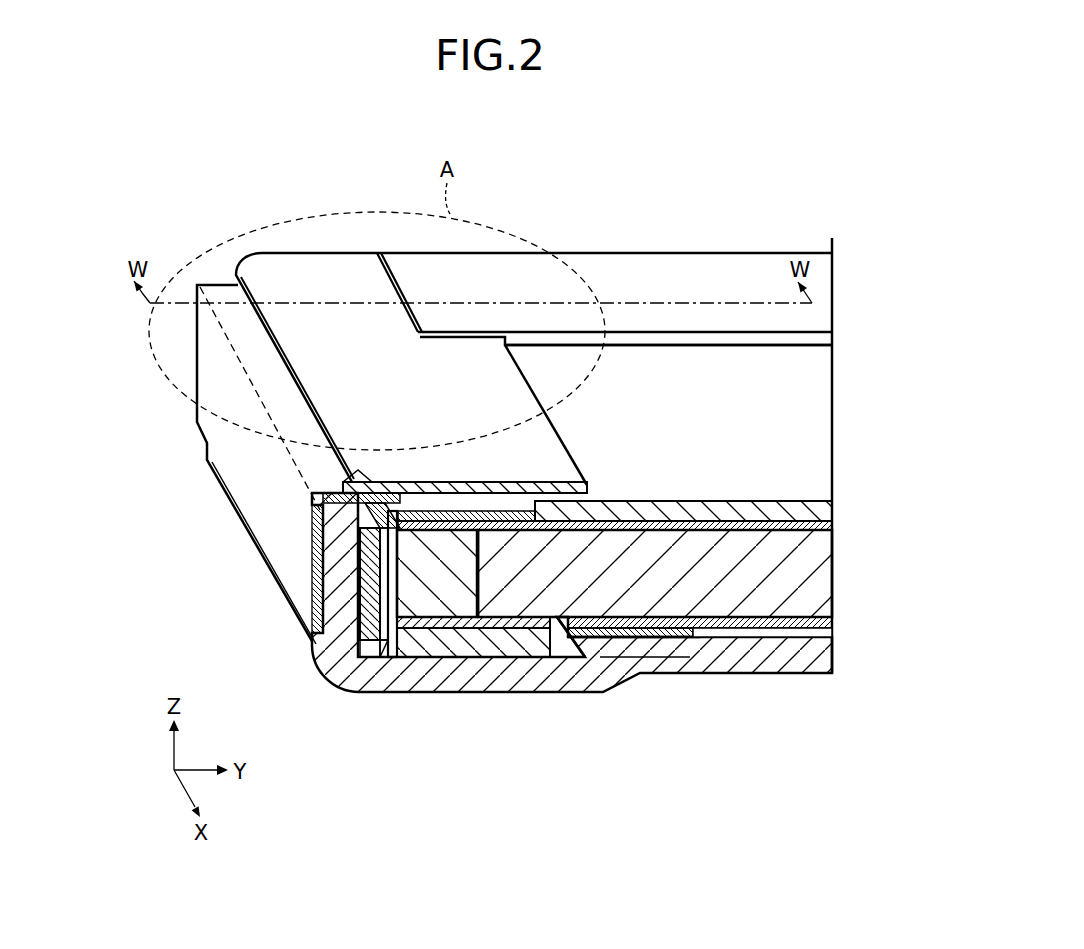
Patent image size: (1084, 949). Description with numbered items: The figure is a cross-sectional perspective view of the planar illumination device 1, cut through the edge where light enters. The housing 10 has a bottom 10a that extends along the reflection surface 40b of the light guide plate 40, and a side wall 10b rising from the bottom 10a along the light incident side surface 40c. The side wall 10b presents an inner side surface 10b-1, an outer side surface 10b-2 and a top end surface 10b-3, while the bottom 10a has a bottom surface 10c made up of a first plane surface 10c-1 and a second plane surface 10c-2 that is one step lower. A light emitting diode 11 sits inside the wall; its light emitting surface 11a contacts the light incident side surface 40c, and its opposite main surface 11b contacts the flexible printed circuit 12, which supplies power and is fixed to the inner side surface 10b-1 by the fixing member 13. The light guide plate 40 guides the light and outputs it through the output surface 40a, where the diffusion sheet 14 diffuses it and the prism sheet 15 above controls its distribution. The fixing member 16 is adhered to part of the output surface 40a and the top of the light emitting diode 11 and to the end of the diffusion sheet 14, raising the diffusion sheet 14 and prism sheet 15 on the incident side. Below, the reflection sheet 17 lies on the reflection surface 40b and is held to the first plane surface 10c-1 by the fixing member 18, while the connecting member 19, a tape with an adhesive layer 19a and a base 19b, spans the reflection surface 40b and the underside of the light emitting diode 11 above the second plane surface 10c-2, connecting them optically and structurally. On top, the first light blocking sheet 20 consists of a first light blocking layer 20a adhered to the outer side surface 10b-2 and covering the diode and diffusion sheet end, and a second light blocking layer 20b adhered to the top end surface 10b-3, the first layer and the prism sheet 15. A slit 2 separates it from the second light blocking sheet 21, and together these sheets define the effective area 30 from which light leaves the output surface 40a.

The planar illumination device 1 is at (792, 215).
The slit 2 is at (379, 248).
The housing 10 is at (486, 624).
The bottom 10a is at (642, 657).
The side wall 10b is at (235, 551).
The inner side surface 10b-1 is at (356, 470).
The outer side surface 10b-2 is at (345, 476).
The top end surface 10b-3 is at (364, 470).
The bottom surface 10c is at (643, 697).
The first plane surface 10c-1 is at (675, 642).
The second plane surface 10c-2 is at (563, 658).
The light emitting diode 11 is at (442, 644).
The light emitting surface 11a is at (477, 594).
The main surface 11b is at (383, 605).
The flexible printed circuit 12 is at (384, 655).
The fixing member 13 is at (376, 644).
The diffusion sheet 14 is at (827, 525).
The prism sheet 15 is at (823, 513).
The fixing member 16 is at (363, 578).
The reflection sheet 17 is at (827, 623).
The fixing member 18 is at (680, 636).
The connecting member 19 is at (466, 707).
The adhesive layer 19a is at (415, 617).
The base 19b is at (463, 650).
The first light blocking sheet 20 is at (514, 377).
The first light blocking layer 20a is at (231, 297).
The second light blocking layer 20b is at (340, 268).
The second light blocking sheet 21 is at (622, 267).
The effective area 30 is at (808, 365).
The light guide plate 40 is at (655, 619).
The output surface 40a is at (743, 516).
The reflection surface 40b is at (692, 634).
The light incident side surface 40c is at (456, 583).